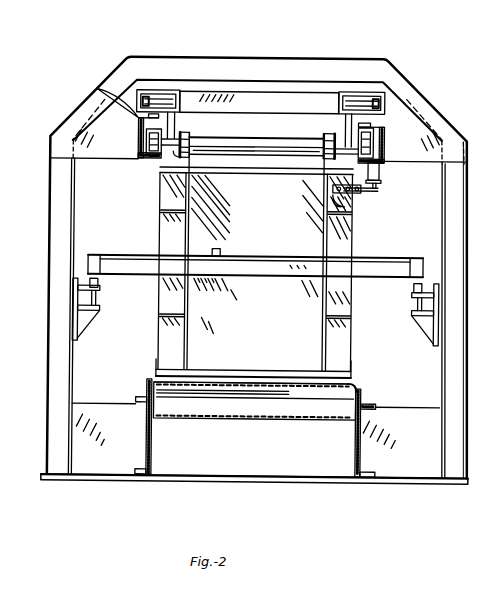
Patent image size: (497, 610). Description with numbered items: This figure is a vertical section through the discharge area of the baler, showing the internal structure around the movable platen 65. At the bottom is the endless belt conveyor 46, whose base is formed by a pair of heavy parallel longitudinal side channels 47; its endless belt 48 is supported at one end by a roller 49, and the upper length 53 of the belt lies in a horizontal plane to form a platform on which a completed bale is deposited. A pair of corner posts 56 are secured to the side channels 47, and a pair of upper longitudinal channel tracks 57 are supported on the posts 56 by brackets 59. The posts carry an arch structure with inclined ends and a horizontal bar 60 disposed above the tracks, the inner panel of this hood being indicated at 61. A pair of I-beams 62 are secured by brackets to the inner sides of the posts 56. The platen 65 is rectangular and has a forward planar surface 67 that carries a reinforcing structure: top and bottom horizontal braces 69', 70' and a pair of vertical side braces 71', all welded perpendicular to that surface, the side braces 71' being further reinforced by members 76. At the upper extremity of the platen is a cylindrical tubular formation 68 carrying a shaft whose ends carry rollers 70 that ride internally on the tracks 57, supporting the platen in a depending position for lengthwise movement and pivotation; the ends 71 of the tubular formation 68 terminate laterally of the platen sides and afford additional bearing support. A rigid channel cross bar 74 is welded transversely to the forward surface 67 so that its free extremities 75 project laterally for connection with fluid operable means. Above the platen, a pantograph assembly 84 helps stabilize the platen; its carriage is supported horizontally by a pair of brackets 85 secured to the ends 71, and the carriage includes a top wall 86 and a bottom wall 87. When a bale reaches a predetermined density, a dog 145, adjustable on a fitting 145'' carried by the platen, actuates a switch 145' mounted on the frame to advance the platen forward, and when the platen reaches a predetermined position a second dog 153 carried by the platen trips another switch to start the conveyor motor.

The endless belt conveyor 46 is at (369, 401).
The longitudinal side channels 47 is at (154, 446).
The endless belt 48 is at (330, 420).
The roller 49 is at (351, 390).
The upper length of the belt 53 is at (305, 383).
The corner posts 56 is at (65, 211).
The upper longitudinal channel tracks 57 is at (137, 134).
The brackets 59 is at (77, 110).
The horizontal bar 60 is at (313, 57).
The hood inner panel 61 is at (342, 69).
The I-beams 62 is at (98, 298).
The platen 65 is at (257, 207).
The forward planar surface 67 is at (255, 306).
The cylindrical tubular formation 68 is at (261, 145).
The top horizontal brace 69' is at (256, 180).
The rollers 70 is at (257, 144).
The bottom horizontal brace 70' is at (253, 362).
The ends of the tubular formation 71 is at (254, 145).
The side braces 71' is at (255, 251).
The channel cross bar 74 is at (251, 273).
The free extremities of the cross bar 75 is at (138, 261).
The reinforcing members 76 is at (164, 212).
The pantograph assembly 84 is at (258, 92).
The brackets 85 is at (177, 122).
The top wall of the carriage 86 is at (166, 90).
The bottom wall of the carriage 87 is at (95, 90).
The dog 145 is at (364, 200).
The switch 145' is at (396, 175).
The fitting 145'' is at (316, 204).
The dog 153 is at (221, 251).